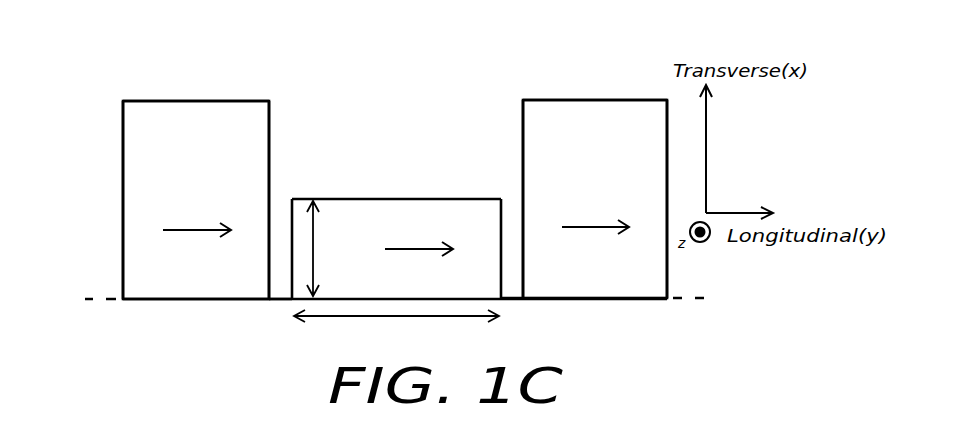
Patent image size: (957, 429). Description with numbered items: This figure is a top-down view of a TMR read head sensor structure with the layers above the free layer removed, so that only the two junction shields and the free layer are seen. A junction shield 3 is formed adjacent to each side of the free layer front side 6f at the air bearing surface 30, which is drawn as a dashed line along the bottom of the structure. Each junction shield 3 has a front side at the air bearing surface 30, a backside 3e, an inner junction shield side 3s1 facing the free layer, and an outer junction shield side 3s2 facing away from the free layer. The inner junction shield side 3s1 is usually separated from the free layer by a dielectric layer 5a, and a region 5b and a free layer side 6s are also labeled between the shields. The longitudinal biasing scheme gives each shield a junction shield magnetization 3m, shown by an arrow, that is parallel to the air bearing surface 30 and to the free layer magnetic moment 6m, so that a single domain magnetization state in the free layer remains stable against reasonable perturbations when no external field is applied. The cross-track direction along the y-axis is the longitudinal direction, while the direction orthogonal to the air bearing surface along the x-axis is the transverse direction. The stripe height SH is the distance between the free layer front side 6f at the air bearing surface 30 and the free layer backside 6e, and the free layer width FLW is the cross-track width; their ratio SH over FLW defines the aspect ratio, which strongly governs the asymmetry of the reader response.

The junction shield 3 is at (133, 124).
The junction shield backside 3e is at (227, 98).
The inner junction shield side 3s1 is at (269, 127).
The outer junction shield side 3s2 is at (123, 236).
The junction shield magnetization 3m is at (396, 221).
The air bearing surface 30 is at (394, 302).
The dielectric layer 5a is at (279, 287).
The gap region 5b is at (392, 122).
The free layer backside 6e is at (368, 197).
The free layer front side 6f is at (337, 213).
The side of free layer 6s is at (503, 258).
The free layer magnetic moment 6m is at (419, 242).
The stripe height SH is at (327, 248).
The free layer width FLW is at (396, 323).